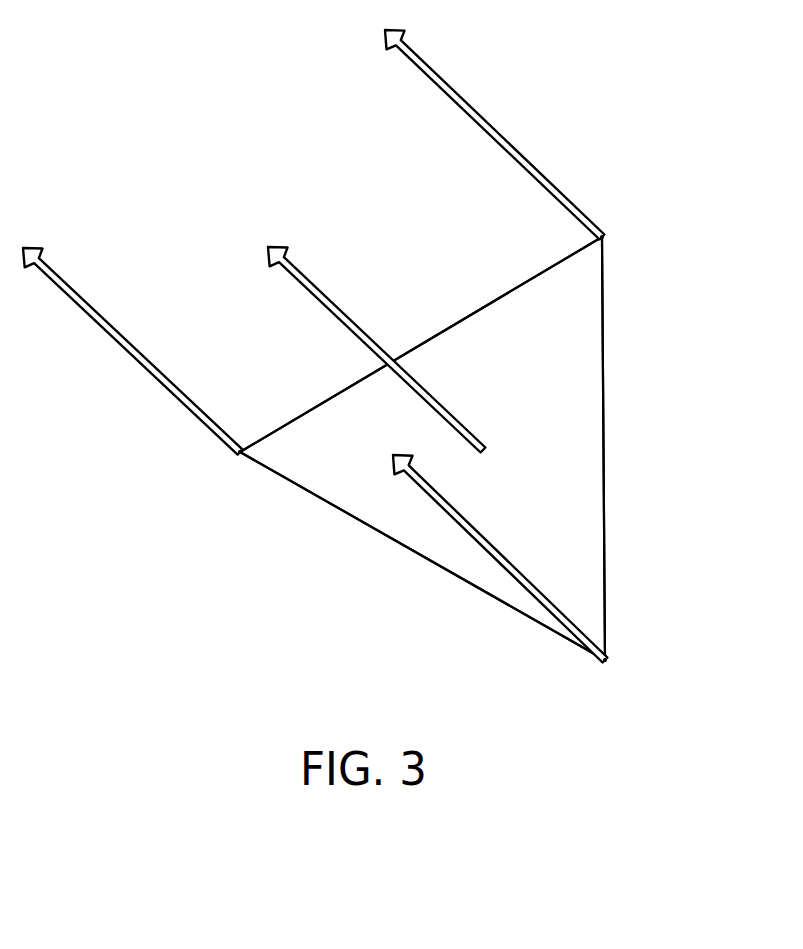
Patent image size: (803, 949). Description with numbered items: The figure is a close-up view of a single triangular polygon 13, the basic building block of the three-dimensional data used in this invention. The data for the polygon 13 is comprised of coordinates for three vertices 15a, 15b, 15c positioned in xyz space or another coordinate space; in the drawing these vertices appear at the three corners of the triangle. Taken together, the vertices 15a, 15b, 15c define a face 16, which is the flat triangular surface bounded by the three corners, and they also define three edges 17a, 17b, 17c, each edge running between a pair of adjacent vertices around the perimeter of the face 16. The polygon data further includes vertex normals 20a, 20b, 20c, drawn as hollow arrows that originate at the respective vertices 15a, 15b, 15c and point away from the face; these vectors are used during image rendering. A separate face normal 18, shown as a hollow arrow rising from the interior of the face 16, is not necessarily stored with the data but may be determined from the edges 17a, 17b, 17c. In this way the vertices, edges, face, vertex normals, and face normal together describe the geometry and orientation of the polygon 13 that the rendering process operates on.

The triangular polygon 13 is at (118, 74).
The vertex 15a is at (607, 233).
The vertex 15b is at (609, 659).
The vertex 15c is at (239, 455).
The face 16 is at (583, 393).
The edge 17a is at (468, 312).
The edge 17b is at (598, 493).
The edge 17c is at (391, 542).
The face normal 18 is at (316, 279).
The vertex normal 20a is at (537, 165).
The vertex normal 20b is at (459, 510).
The vertex normal 20c is at (78, 300).